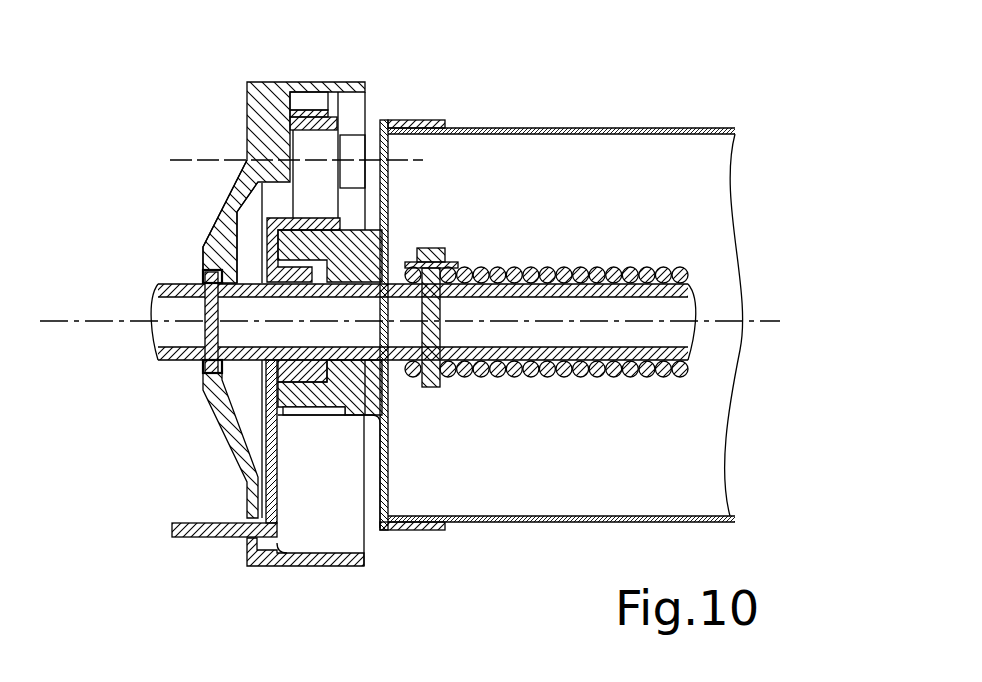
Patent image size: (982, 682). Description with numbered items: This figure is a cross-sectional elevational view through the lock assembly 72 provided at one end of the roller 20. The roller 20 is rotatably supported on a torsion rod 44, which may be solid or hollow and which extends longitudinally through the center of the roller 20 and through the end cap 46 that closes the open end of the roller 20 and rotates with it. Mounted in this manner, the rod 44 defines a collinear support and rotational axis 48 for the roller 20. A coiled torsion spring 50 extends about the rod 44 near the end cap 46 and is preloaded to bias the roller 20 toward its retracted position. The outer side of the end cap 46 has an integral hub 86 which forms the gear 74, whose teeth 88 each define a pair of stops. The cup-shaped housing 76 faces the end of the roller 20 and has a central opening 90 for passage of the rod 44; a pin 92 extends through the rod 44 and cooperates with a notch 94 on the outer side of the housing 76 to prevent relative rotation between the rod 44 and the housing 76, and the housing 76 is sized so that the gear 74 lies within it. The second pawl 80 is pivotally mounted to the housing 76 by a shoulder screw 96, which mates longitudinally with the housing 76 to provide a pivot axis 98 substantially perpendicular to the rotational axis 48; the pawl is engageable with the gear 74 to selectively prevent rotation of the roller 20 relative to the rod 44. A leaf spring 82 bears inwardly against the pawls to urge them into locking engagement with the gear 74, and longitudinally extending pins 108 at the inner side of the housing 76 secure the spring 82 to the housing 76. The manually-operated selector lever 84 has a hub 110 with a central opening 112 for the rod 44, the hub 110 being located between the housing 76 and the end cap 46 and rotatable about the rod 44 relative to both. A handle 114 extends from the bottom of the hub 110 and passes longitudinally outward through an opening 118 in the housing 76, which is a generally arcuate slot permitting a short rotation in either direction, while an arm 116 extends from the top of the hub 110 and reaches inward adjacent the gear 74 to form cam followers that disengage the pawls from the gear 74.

The lock assembly 72 is at (323, 78).
The housing 76 is at (250, 82).
The pins 108 is at (308, 100).
The spring 82 is at (313, 113).
The second pawl 80 is at (352, 132).
The pivot axis 98 is at (225, 160).
The arm 116 is at (305, 218).
The hub 110 is at (295, 262).
The central opening 112 is at (288, 355).
The teeth 88 is at (328, 413).
The gear 74 is at (325, 419).
The hub 86 is at (353, 415).
The end cap 46 is at (419, 118).
The shoulder screws 96 is at (417, 117).
The roller 20 is at (602, 128).
The torsion spring 50 is at (647, 268).
The torsion rod 44 is at (187, 360).
The rotational axis 48 is at (100, 320).
The pin 92 is at (207, 313).
The notch 94 is at (220, 268).
The central opening 90 is at (238, 282).
The handle 114 is at (218, 537).
The selector lever 84 is at (186, 540).
The opening 118 is at (262, 540).